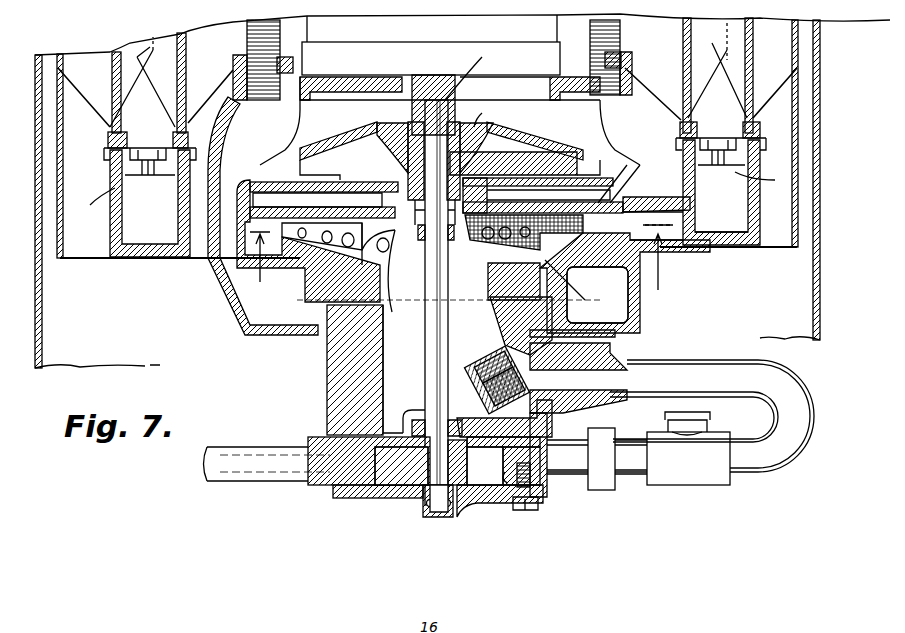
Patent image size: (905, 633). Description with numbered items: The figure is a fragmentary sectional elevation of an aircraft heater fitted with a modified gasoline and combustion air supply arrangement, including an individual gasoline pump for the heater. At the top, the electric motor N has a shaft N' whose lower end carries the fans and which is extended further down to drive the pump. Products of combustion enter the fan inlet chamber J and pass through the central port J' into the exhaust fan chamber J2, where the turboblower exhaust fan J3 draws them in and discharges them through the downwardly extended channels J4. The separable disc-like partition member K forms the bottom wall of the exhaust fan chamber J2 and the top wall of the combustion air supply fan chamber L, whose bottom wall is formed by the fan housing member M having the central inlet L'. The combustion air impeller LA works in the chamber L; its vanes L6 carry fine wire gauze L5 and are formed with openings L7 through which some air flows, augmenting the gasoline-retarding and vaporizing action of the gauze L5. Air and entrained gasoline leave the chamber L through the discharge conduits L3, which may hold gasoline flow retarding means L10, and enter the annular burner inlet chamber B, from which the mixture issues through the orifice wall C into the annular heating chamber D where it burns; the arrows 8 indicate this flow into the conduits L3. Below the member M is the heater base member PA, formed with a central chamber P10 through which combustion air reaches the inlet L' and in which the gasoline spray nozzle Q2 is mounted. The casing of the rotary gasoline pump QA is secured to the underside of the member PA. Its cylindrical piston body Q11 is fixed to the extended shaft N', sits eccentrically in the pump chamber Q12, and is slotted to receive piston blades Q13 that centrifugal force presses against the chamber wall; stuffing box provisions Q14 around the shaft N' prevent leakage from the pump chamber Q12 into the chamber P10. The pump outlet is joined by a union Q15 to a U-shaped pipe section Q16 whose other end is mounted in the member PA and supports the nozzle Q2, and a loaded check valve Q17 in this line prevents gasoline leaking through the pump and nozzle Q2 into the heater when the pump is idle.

The electric motor N is at (432, 28).
The motor shaft N' is at (431, 71).
The fan inlet chamber J is at (451, 137).
The central port J' is at (485, 119).
The exhaust fan chamber J2 is at (533, 143).
The exhaust fan J3 is at (488, 160).
The downwardly extended channels J4 is at (225, 235).
The partition member K is at (366, 185).
The combustion air supply fan chamber L is at (529, 263).
The central inlet L' is at (324, 246).
The discharge conduits L3 is at (653, 227).
The fine wire gauze L5 is at (567, 267).
The impeller vanes L6 is at (336, 263).
The openings in the vanes L7 is at (576, 185).
The gasoline flow retarding means L10 is at (698, 222).
The combustion air impeller LA is at (396, 369).
The fan housing member M is at (232, 325).
The annular heating chamber D is at (435, 141).
The burner inlet chamber B is at (435, 198).
The orifice wall C is at (434, 199).
The flow arrow 8 is at (461, 263).
The central chamber P10 is at (410, 384).
The heater base member PA is at (325, 372).
The gasoline spray nozzle Q2 is at (487, 362).
The stuffing box provisions Q14 is at (420, 418).
The gasoline pump QA is at (360, 497).
The cylindrical piston body Q11 is at (460, 477).
The pump chamber Q12 is at (510, 483).
The piston blades Q13 is at (490, 475).
The union Q15 is at (608, 483).
The pipe section Q16 is at (777, 473).
The loaded check valve Q17 is at (698, 476).